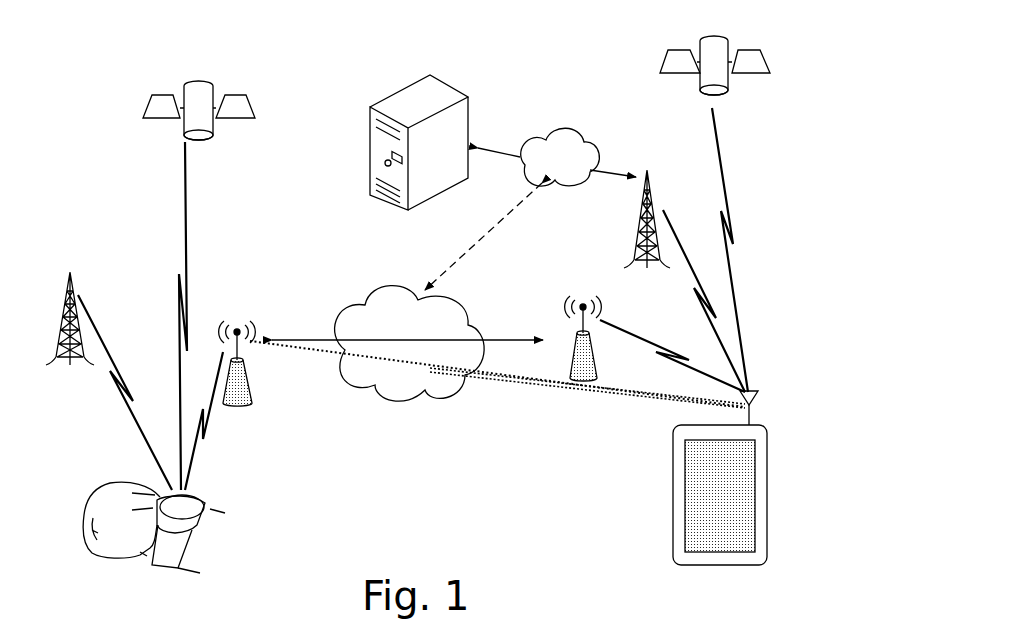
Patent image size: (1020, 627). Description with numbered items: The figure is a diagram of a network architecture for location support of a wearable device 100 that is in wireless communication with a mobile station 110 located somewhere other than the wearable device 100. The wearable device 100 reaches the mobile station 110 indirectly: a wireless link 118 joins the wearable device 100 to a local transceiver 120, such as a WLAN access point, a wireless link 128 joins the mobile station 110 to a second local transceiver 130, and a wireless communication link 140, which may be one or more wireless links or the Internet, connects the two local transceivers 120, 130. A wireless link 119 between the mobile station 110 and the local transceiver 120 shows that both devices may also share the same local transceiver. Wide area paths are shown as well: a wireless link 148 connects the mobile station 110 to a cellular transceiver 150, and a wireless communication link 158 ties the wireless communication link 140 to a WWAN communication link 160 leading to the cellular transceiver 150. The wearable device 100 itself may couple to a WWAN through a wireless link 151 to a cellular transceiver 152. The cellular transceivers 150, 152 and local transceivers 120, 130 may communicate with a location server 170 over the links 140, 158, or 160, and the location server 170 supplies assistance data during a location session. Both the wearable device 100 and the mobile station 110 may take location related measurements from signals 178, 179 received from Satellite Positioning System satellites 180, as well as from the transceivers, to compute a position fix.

The wearable device 100 is at (203, 503).
The mobile station 110 is at (673, 545).
The wireless link 118 is at (207, 432).
The wireless link 119 is at (572, 386).
The local transceiver 120 is at (232, 403).
The wireless link 128 is at (620, 328).
The local transceiver 130 is at (566, 345).
The wireless communication link 140 is at (425, 400).
The wireless link 148 is at (700, 308).
The cellular transceiver 150 is at (640, 190).
The wireless link 151 is at (118, 396).
The cellular transceiver 152 is at (72, 275).
The wireless communication link 158 is at (460, 258).
The WWAN communication link 160 is at (566, 128).
The location server 170 is at (465, 92).
The signal 178 is at (745, 312).
The signal 179 is at (183, 262).
The satellite 180 is at (245, 95).